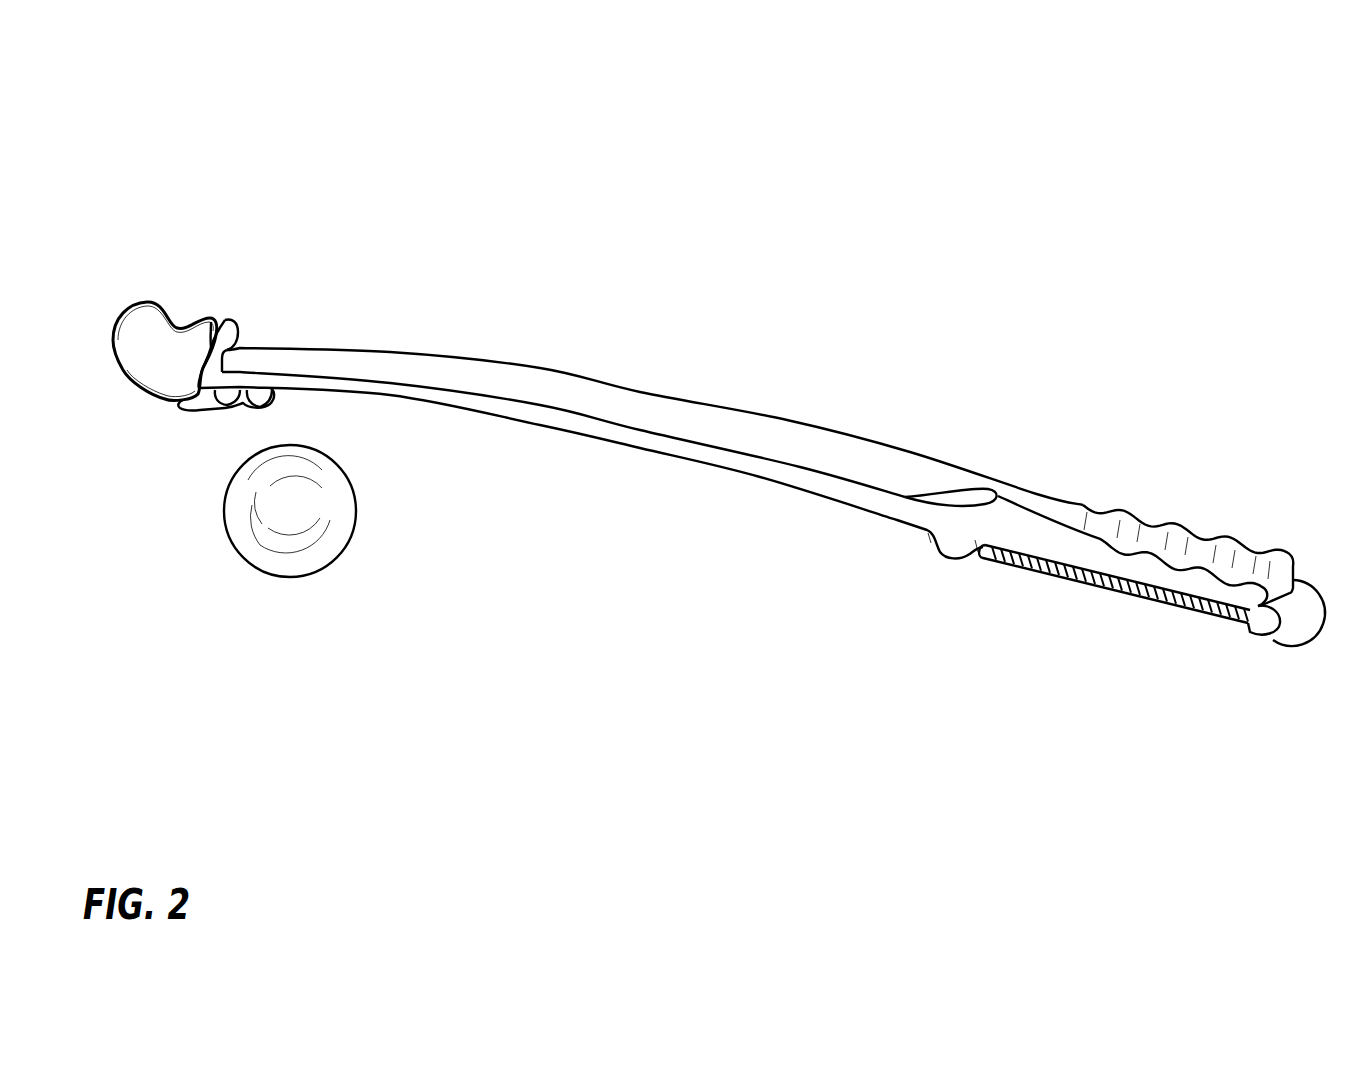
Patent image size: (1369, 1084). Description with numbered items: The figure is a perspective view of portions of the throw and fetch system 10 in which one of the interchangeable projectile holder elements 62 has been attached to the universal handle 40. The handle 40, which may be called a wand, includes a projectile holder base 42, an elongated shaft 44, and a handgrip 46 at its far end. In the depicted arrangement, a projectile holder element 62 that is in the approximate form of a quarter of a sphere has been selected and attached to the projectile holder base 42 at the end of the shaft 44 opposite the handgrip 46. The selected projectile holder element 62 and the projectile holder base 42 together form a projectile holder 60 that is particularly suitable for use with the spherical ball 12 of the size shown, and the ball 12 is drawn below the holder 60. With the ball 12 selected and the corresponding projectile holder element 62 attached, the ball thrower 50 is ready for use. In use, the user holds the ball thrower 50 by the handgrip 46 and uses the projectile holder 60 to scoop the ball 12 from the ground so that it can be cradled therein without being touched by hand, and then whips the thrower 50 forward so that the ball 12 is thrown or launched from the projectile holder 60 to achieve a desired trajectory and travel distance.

The throw and fetch system 10 is at (258, 107).
The spherical ball 12 is at (344, 510).
The universal handle 40 is at (783, 383).
The projectile holder base 42 is at (237, 322).
The shaft 44 is at (683, 418).
The handgrip 46 is at (1257, 560).
The ball thrower 50 is at (505, 221).
The projectile holder 60 is at (221, 316).
The projectile holder element 62 is at (155, 324).